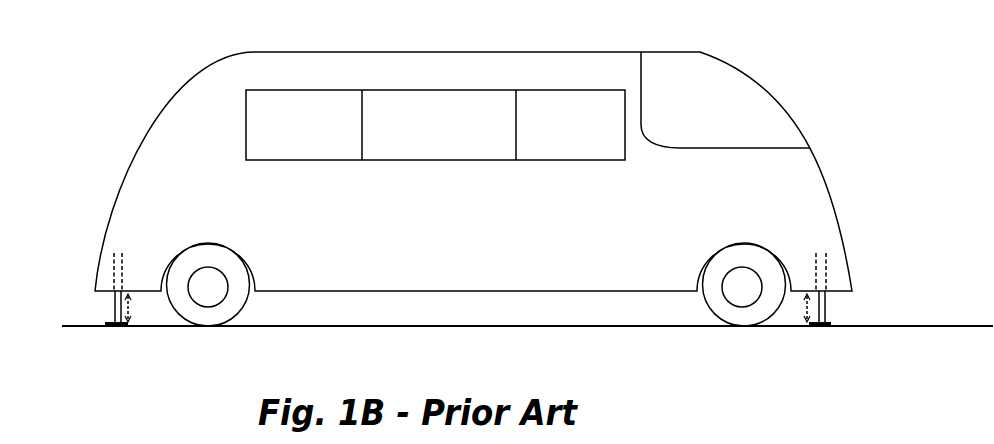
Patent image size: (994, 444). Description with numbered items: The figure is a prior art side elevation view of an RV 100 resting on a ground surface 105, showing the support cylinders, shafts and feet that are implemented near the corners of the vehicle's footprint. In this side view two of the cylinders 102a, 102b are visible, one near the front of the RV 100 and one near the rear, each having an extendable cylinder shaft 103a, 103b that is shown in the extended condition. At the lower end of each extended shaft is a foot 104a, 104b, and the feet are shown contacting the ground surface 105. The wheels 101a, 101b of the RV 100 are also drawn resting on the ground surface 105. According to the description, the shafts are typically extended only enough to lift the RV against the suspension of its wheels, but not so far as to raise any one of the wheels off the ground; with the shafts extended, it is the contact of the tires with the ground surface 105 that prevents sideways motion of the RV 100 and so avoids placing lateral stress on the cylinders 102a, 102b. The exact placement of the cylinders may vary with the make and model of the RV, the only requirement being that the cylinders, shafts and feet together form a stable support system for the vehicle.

The RV 100 is at (257, 48).
The front wheel 101a is at (737, 262).
The rear wheel 101b is at (210, 262).
The cylinder 102a is at (829, 272).
The cylinder 102b is at (112, 273).
The cylinder shaft 103a is at (827, 308).
The cylinder shaft 103b is at (114, 310).
The foot 104a is at (828, 328).
The foot 104b is at (110, 328).
The ground surface 105 is at (578, 328).